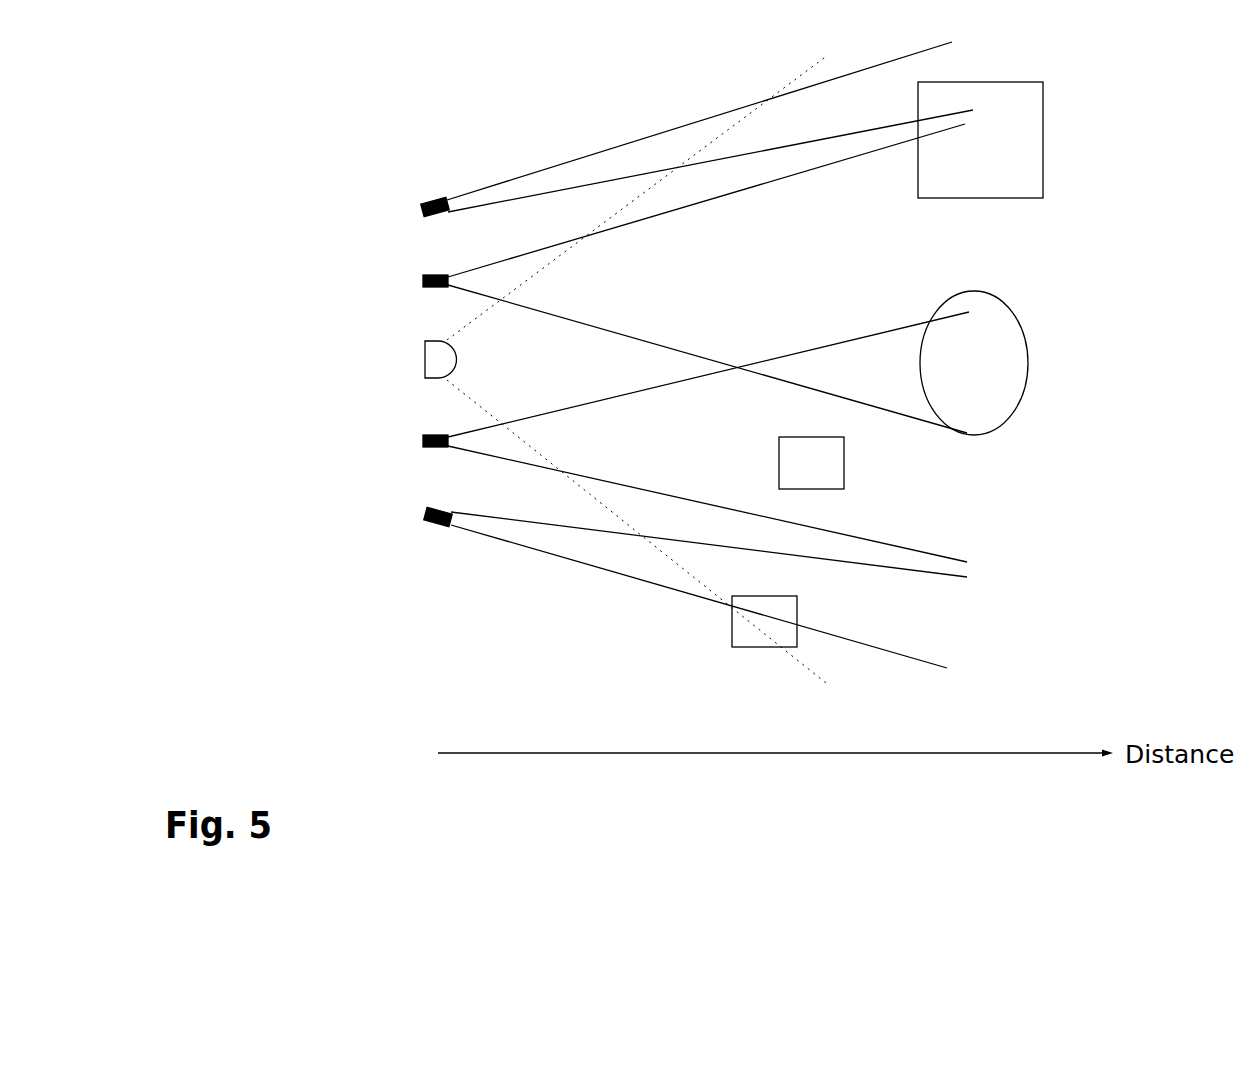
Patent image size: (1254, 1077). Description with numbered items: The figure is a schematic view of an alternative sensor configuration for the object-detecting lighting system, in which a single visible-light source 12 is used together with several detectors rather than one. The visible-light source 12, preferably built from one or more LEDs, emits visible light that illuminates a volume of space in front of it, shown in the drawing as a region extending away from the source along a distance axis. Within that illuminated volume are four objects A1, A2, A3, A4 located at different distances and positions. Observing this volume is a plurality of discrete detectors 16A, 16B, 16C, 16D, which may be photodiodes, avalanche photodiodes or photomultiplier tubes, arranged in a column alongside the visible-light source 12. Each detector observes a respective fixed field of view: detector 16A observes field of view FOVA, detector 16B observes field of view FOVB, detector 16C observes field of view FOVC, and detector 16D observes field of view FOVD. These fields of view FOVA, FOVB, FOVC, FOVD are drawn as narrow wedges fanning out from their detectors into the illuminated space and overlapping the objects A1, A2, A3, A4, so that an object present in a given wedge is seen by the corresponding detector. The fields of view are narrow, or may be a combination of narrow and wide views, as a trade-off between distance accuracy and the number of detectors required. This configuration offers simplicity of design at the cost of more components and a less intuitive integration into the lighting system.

The visible-light source 12 is at (425, 362).
The discrete detector 16A is at (425, 206).
The discrete detector 16B is at (423, 280).
The discrete detector 16C is at (423, 440).
The discrete detector 16D is at (425, 512).
The fixed field of view FOVA is at (678, 125).
The fixed field of view FOVB is at (623, 223).
The fixed field of view FOVC is at (625, 395).
The fixed field of view FOVD is at (637, 580).
The object A1 is at (732, 637).
The object A2 is at (844, 478).
The object A3 is at (1025, 388).
The object A4 is at (1043, 157).